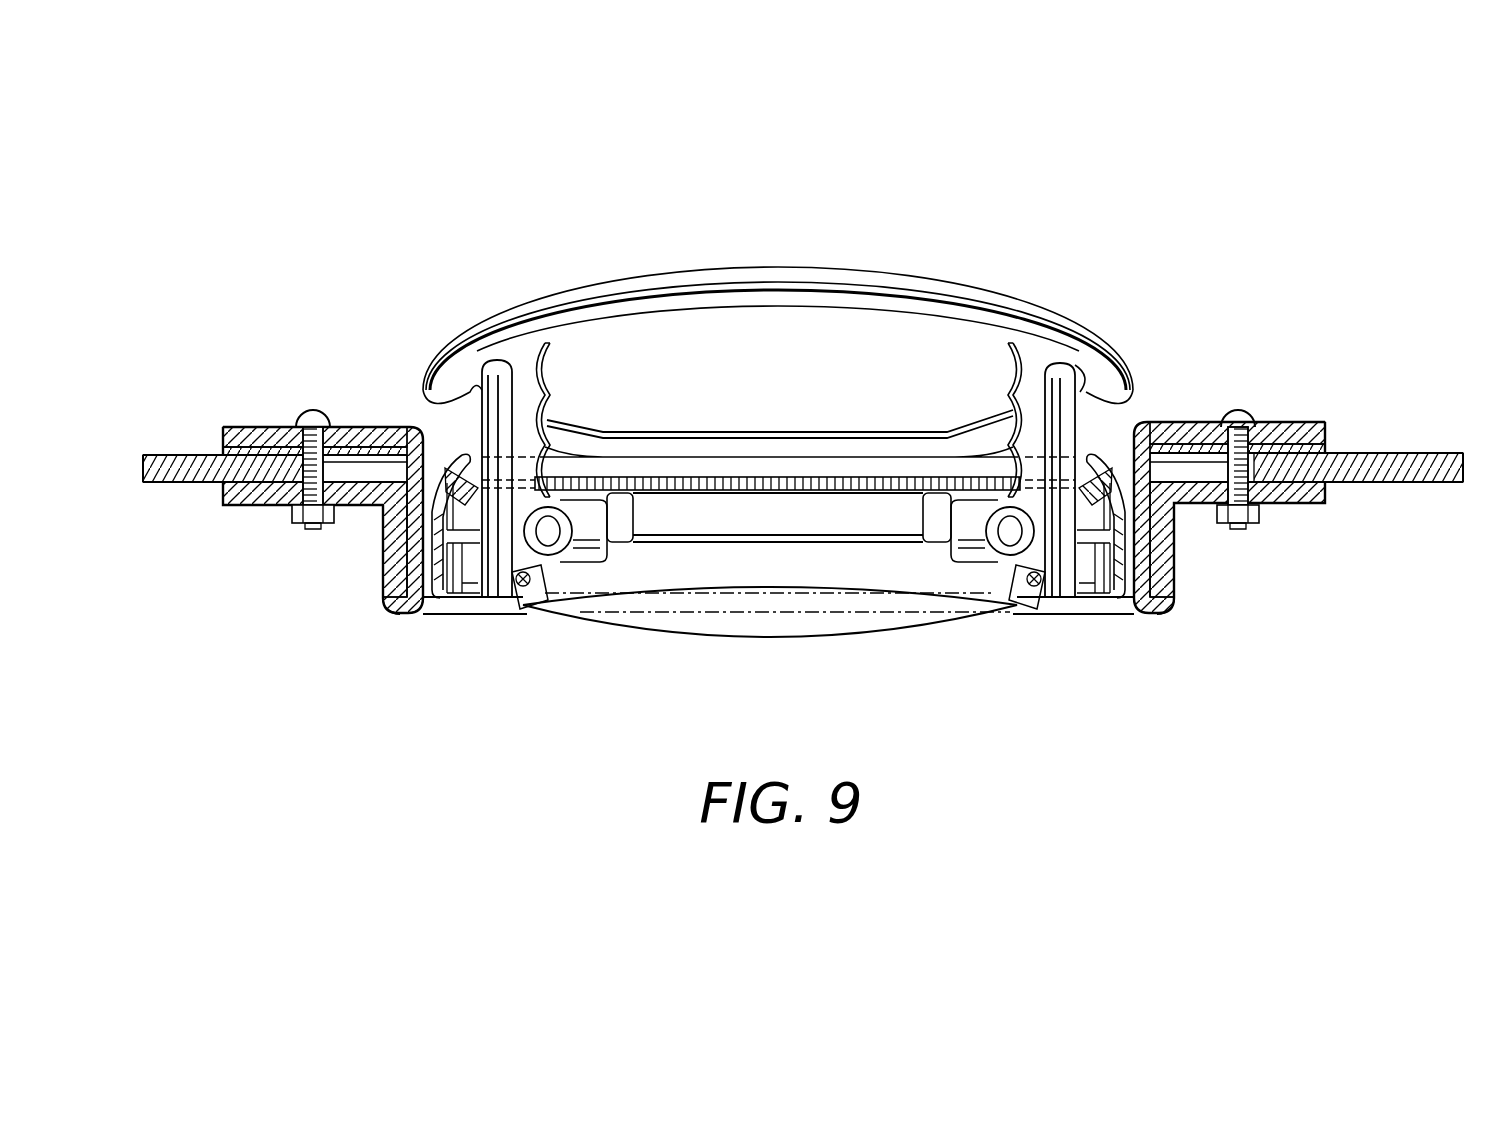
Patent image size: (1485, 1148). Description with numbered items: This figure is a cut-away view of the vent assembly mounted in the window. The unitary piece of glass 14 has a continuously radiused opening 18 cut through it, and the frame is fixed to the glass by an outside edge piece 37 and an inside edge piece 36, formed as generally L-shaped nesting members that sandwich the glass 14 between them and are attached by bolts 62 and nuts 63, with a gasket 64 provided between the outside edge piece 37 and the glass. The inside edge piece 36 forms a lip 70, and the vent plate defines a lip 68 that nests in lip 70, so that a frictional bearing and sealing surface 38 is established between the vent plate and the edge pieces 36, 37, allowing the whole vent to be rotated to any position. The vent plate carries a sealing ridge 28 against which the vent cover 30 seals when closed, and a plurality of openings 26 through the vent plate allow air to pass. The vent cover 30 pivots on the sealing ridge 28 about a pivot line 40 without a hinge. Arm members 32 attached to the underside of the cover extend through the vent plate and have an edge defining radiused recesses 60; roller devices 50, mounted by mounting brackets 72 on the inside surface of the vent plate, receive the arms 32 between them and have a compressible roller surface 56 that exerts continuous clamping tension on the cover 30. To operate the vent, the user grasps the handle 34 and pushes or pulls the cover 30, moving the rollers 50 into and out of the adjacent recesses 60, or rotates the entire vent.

The glass 14 is at (178, 458).
The opening 18 is at (355, 470).
The openings 26 is at (840, 480).
The sealing ridge 28 is at (447, 460).
The vent cover 30 is at (807, 275).
The arm members 32 is at (510, 390).
The handle 34 is at (820, 607).
The inside edge piece 36 is at (257, 490).
The outside edge piece 37 is at (249, 427).
The frictional bearing and sealing surface 38 is at (1153, 561).
The pivot line 40 is at (766, 428).
The roller devices 50 is at (548, 535).
The compressible roller surface 56 is at (553, 586).
The radiused recesses 60 is at (546, 413).
The bolts 62 is at (1237, 410).
The nuts 63 is at (1240, 512).
The gasket 64 is at (287, 450).
The lip 68 is at (423, 600).
The lip 70 is at (393, 603).
The mounting brackets 72 is at (622, 514).